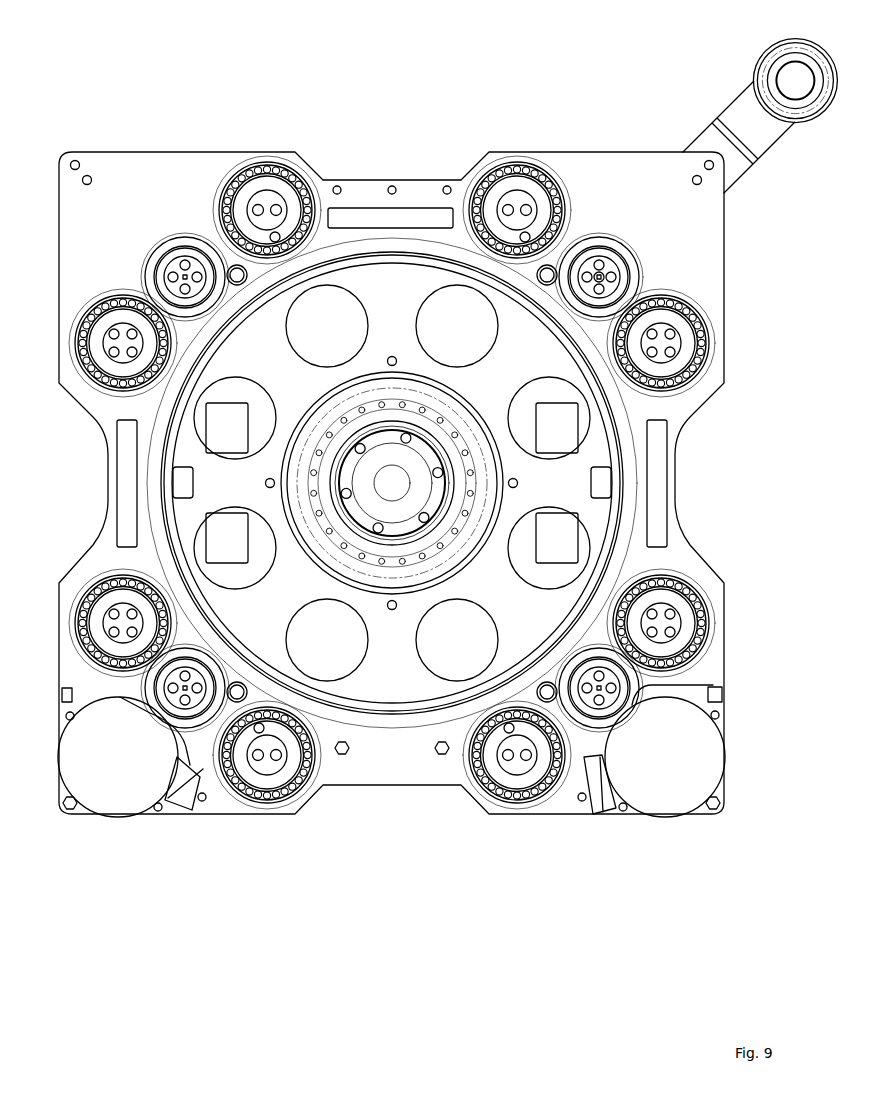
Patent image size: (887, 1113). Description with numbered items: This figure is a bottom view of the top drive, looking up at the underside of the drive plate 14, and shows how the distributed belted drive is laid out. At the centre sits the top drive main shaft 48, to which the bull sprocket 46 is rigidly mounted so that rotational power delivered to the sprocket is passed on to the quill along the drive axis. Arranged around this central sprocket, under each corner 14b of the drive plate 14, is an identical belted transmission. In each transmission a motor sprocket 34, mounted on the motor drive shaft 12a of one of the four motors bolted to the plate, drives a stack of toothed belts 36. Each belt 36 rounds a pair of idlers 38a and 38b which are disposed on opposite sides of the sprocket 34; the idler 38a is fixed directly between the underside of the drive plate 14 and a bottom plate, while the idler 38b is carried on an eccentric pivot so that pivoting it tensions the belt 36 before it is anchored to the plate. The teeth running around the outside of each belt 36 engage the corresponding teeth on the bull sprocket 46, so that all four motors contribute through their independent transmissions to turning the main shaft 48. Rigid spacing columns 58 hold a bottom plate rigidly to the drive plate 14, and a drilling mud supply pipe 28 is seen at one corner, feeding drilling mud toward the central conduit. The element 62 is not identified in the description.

The drive plate 14 is at (420, 172).
The corner of drive plate 14b is at (66, 148).
The motor drive shaft 12a is at (608, 267).
The drilling mud supply pipe 28 is at (745, 167).
The motor sprocket 34 is at (173, 247).
The toothed belt 36 is at (567, 276).
The idler 38a is at (502, 157).
The idler 38b is at (523, 160).
The bull sprocket 46 is at (410, 722).
The top drive main shaft 48 is at (362, 490).
The rigid spacing column 58 is at (370, 208).
The latch assembly 62 is at (123, 793).